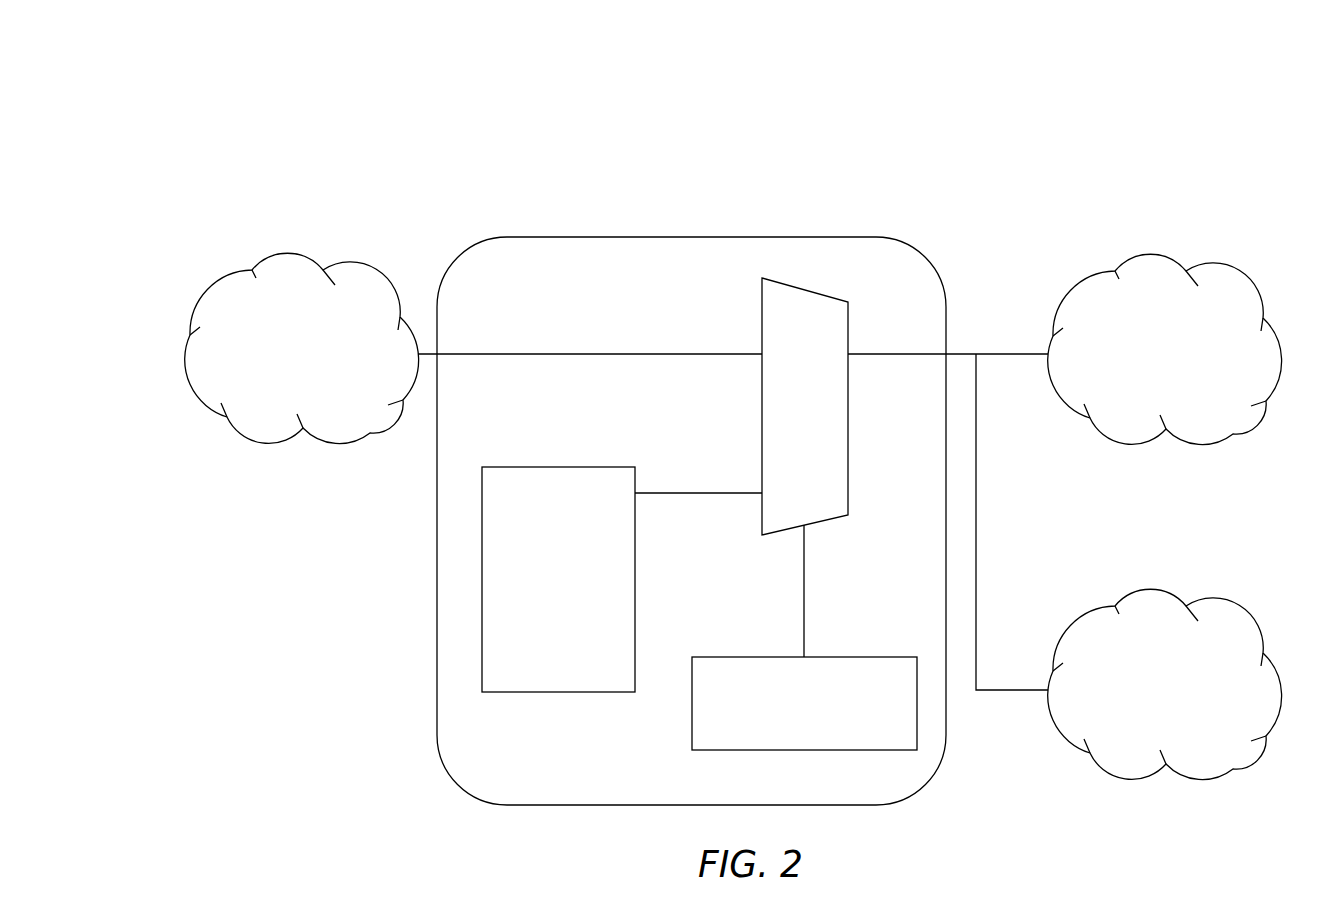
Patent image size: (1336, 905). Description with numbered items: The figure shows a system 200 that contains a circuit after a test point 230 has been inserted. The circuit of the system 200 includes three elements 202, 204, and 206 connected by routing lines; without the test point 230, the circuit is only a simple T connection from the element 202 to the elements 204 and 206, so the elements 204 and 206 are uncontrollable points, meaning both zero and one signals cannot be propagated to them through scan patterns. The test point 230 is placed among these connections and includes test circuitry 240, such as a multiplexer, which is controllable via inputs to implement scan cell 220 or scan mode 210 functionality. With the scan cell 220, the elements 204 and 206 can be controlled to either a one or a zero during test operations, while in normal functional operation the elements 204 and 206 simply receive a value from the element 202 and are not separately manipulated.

The system 200 is at (286, 62).
The element 202 is at (297, 252).
The element 204 is at (1160, 254).
The element 206 is at (1150, 588).
The scan mode 210 is at (842, 657).
The scan cell 220 is at (613, 463).
The test point 230 is at (827, 236).
The test circuitry 240 is at (762, 301).